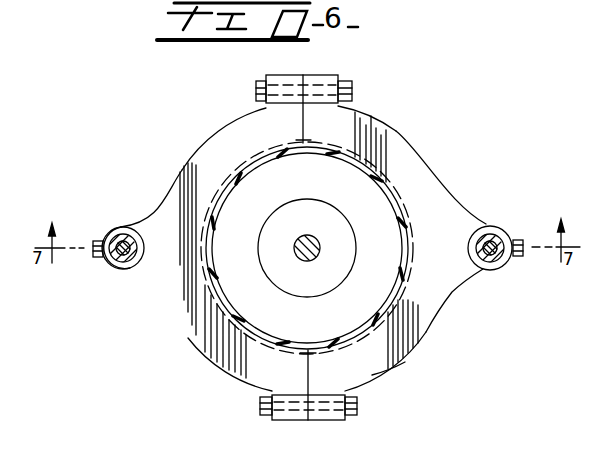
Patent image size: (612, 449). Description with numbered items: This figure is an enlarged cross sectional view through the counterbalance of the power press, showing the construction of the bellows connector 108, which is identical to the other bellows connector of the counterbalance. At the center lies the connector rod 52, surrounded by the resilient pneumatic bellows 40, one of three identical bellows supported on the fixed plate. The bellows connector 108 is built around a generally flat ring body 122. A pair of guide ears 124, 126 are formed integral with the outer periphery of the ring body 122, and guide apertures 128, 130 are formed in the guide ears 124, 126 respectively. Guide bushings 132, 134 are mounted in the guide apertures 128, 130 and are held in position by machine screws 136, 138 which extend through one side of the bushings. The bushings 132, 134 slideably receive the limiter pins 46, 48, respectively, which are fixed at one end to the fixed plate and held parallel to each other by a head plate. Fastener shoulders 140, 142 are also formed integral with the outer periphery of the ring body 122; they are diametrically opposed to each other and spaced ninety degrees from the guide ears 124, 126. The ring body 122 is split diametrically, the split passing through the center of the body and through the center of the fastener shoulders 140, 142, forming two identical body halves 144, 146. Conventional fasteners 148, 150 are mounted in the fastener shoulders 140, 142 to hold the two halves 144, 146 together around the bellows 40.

The resilient pneumatic bellows 40 is at (393, 182).
The limiter pin 46 is at (136, 226).
The limiter pin 48 is at (484, 263).
The connector rod 52 is at (315, 238).
The bellows connector 108 is at (188, 339).
The ring body 122 is at (400, 363).
The guide ear 124 is at (122, 226).
The guide ear 126 is at (479, 222).
The guide aperture 128 is at (124, 270).
The guide aperture 130 is at (498, 266).
The guide bushing 132 is at (115, 267).
The guide bushing 134 is at (496, 234).
The machine screw 136 is at (100, 256).
The machine screw 138 is at (522, 246).
The fastener shoulder 140 is at (334, 79).
The fastener shoulder 142 is at (328, 415).
The body half 144 is at (222, 360).
The body half 146 is at (372, 375).
The fastener 148 is at (356, 92).
The fastener 150 is at (260, 412).